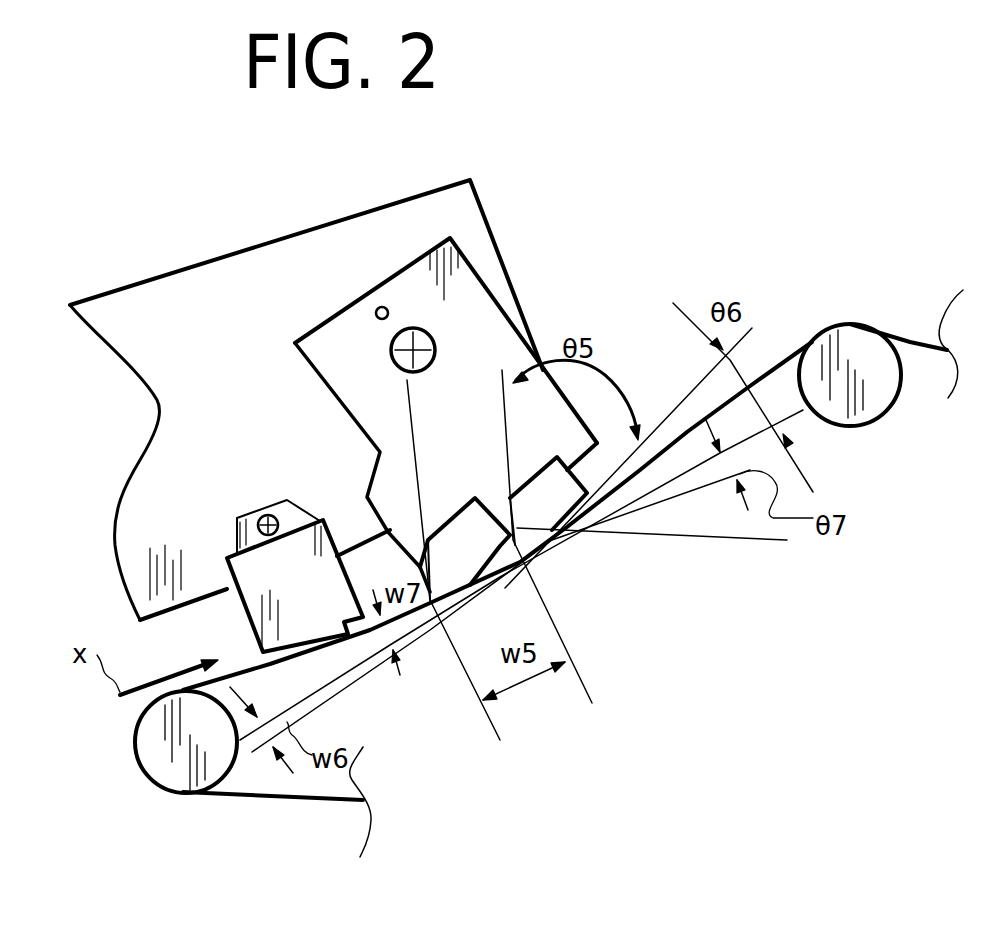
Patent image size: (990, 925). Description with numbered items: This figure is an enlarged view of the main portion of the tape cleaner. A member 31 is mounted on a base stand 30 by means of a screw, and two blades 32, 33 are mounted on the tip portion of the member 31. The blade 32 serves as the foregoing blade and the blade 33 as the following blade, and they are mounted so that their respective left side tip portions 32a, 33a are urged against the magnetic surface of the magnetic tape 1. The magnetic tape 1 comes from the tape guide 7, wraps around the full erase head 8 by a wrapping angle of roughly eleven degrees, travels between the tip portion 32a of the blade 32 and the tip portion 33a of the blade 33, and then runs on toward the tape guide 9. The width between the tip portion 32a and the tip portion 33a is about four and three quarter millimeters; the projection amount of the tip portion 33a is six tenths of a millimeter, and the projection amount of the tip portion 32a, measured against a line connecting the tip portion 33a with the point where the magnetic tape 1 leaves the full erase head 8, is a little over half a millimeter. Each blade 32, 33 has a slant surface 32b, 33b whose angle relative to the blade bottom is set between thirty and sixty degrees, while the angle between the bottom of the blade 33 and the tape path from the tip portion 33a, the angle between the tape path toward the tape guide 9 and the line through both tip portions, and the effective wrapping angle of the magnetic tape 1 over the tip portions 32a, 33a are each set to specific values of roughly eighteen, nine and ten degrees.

The magnetic tape 1 is at (243, 798).
The tape guide 7 is at (162, 788).
The full erase head 8 is at (250, 622).
The tape guide 9 is at (856, 426).
The base stand 30 is at (100, 338).
The member 31 is at (298, 346).
The blade 32 is at (458, 523).
The tip portion of the blade 32a is at (393, 646).
The slant surface of the blade 32b is at (388, 530).
The blade 33 is at (540, 487).
The tip portion of the blade 33a is at (555, 542).
The slant surface of the blade 33b is at (787, 540).